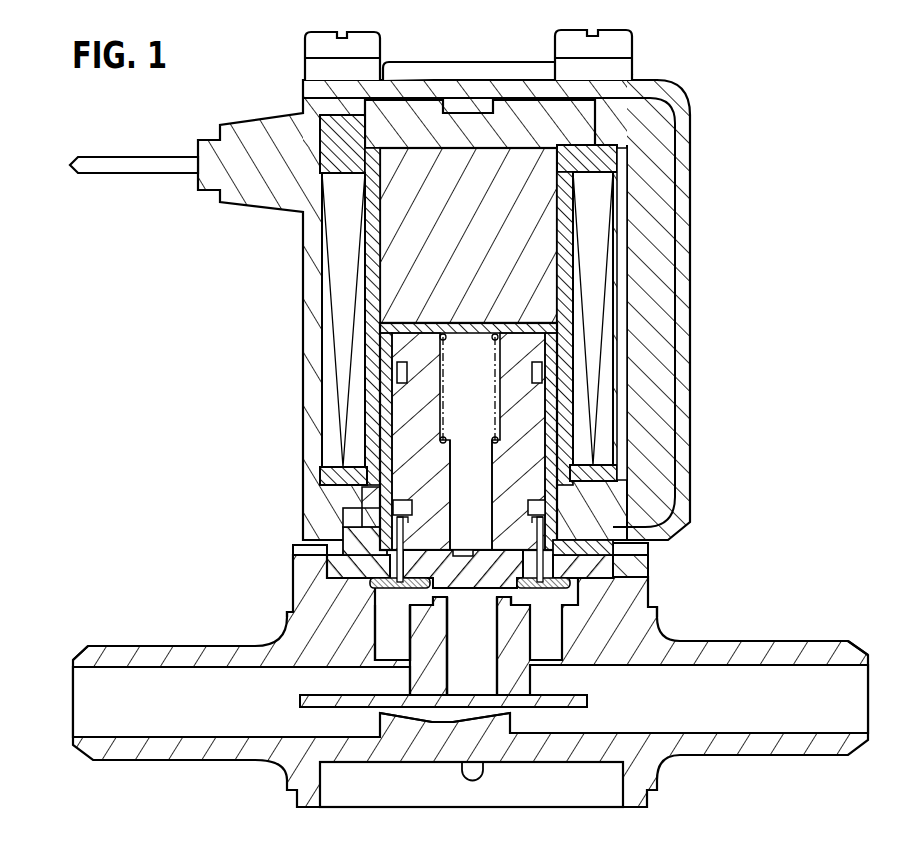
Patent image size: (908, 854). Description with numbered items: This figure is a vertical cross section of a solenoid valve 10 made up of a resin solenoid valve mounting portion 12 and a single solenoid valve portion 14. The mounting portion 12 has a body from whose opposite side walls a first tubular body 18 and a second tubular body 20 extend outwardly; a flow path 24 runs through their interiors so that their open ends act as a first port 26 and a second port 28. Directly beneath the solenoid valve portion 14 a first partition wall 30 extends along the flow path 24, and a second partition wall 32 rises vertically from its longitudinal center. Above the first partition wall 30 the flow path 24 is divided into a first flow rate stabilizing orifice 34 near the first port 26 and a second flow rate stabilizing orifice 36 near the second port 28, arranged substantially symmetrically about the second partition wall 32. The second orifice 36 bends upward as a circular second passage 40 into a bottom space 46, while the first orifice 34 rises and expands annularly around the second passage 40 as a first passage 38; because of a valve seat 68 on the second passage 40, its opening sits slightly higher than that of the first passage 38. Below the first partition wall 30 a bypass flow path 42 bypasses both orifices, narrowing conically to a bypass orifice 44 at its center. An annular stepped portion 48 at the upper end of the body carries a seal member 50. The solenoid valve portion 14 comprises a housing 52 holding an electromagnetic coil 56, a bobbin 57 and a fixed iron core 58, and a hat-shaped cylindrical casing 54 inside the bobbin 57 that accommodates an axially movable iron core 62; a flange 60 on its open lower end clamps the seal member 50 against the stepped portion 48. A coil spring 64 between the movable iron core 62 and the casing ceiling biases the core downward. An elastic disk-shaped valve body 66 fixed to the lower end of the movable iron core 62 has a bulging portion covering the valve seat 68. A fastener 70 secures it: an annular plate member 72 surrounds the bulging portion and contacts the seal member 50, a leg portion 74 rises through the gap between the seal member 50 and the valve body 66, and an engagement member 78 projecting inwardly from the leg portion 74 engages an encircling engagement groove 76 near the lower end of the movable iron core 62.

The solenoid valve 10 is at (152, 122).
The solenoid valve mounting portion 12 is at (704, 631).
The solenoid valve portion 14 is at (691, 205).
The first tubular body 18 is at (127, 757).
The second tubular body 20 is at (797, 752).
The flow path 24 is at (157, 720).
The first port 26 is at (88, 655).
The second port 28 is at (852, 646).
The first partition wall 30 is at (575, 703).
The second partition wall 32 is at (440, 653).
The first flow rate stabilizing orifice 34 is at (308, 684).
The second flow rate stabilizing orifice 36 is at (580, 670).
The first passage 38 is at (330, 613).
The second passage 40 is at (427, 668).
The bypass flow path 42 is at (305, 718).
The bypass orifice 44 is at (437, 724).
The bottom space 46 is at (415, 603).
The stepped portion 48 is at (585, 567).
The seal member 50 is at (597, 570).
The housing 52 is at (686, 483).
The cylindrical casing 54 is at (567, 370).
The electromagnetic coil 56 is at (337, 326).
The bobbin 57 is at (593, 463).
The fixed iron core 58 is at (425, 278).
The flange 60 is at (347, 533).
The movable iron core 62 is at (533, 423).
The coil spring 64 is at (443, 340).
The valve body 66 is at (479, 572).
The valve seat 68 is at (492, 596).
The fastener 70 is at (545, 590).
The annular plate member 72 is at (293, 577).
The leg portion 74 is at (347, 557).
The engagement groove 76 is at (627, 541).
The engagement member 78 is at (433, 538).